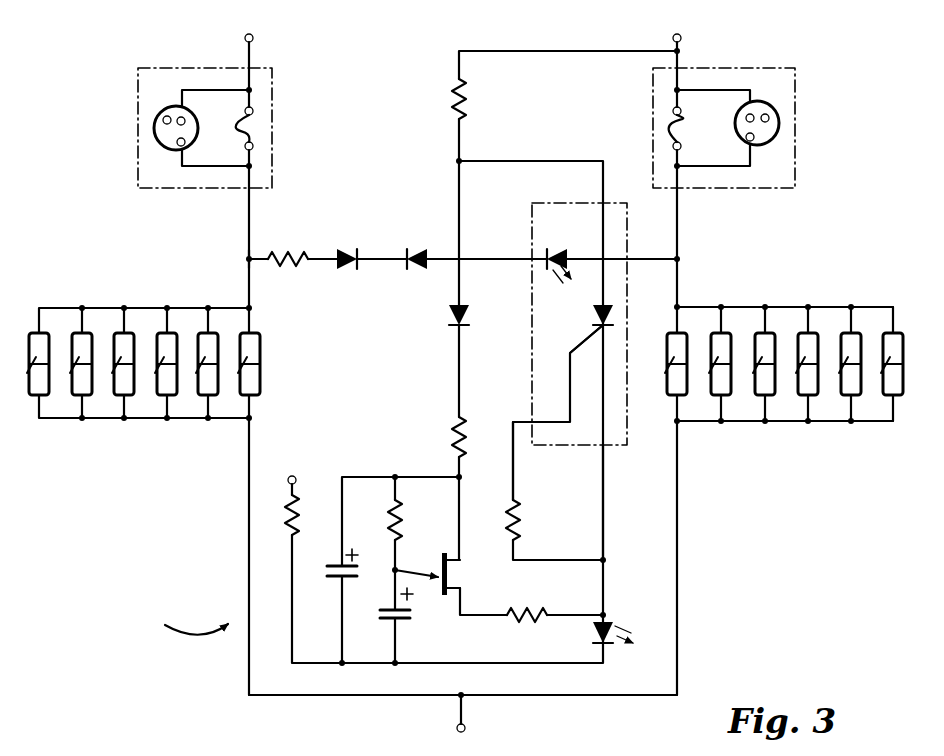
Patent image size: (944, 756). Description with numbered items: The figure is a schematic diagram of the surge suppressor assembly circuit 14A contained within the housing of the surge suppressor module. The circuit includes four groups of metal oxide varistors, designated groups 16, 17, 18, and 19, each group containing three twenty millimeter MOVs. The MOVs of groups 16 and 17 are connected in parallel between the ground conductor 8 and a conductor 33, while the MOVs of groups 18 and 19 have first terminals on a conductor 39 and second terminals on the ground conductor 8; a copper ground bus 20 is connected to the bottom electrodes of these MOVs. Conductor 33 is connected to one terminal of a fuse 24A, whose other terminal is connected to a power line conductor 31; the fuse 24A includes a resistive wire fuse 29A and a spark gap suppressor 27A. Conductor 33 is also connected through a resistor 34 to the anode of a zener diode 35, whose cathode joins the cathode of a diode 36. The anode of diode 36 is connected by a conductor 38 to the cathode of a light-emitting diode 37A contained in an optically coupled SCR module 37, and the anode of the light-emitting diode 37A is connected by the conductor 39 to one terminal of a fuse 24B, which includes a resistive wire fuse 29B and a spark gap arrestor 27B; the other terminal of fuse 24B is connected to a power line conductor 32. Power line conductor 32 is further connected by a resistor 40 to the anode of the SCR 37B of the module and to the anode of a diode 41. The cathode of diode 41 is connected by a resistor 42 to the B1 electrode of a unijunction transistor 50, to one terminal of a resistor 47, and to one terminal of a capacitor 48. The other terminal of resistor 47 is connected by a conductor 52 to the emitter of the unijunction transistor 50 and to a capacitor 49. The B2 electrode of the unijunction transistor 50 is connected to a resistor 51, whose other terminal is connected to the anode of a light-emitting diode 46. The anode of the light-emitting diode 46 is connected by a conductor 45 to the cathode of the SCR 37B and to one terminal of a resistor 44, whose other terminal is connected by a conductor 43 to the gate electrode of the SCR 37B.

The ground conductor 8 is at (466, 728).
The surge suppressor assembly circuit 14A is at (184, 618).
The group of metal oxide varistors 16 is at (137, 430).
The group of metal oxide varistors 17 is at (245, 430).
The group of metal oxide varistors 18 is at (785, 432).
The group of metal oxide varistors 19 is at (905, 432).
The copper ground bus 20 is at (370, 695).
The fuse 24A is at (268, 70).
The fuse 24B is at (785, 68).
The spark gap suppressor 27A is at (170, 108).
The spark gap arrestor 27B is at (772, 105).
The resistive wire fuse 29A is at (240, 135).
The resistive wire fuse 29B is at (682, 140).
The power line conductor 31 is at (245, 38).
The power line conductor 32 is at (681, 38).
The conductor 33 is at (249, 259).
The resistor 34 is at (285, 252).
The zener diode 35 is at (352, 262).
The diode 36 is at (412, 252).
The optically coupled SCR module 37 is at (545, 192).
The light-emitting diode 37A is at (557, 252).
The SCR 37B is at (593, 318).
The conductor 38 is at (478, 259).
The conductor 39 is at (648, 259).
The resistor 40 is at (470, 104).
The diode 41 is at (450, 318).
The resistor 42 is at (455, 435).
The conductor 43 is at (514, 480).
The resistor 44 is at (518, 518).
The conductor 45 is at (605, 520).
The light-emitting diode 46 is at (598, 640).
The resistor 47 is at (400, 508).
The capacitor 48 is at (328, 580).
The capacitor 49 is at (400, 625).
The unijunction transistor 50 is at (470, 558).
The resistor 51 is at (527, 620).
The conductor 52 is at (398, 570).